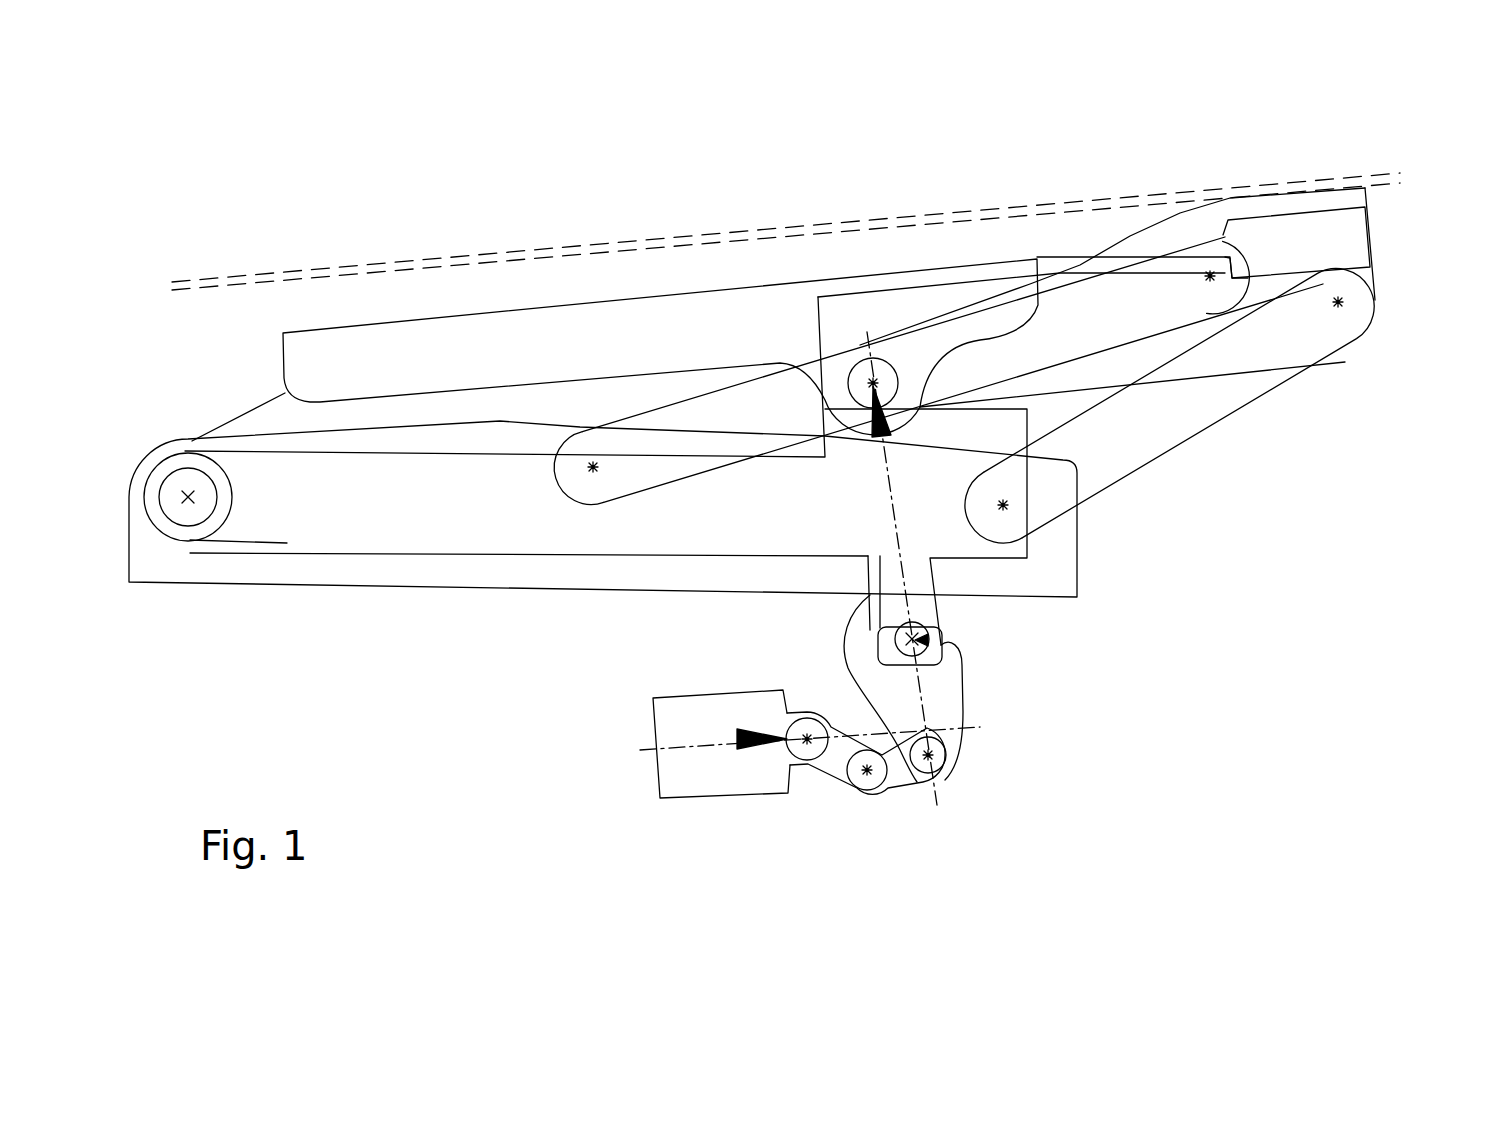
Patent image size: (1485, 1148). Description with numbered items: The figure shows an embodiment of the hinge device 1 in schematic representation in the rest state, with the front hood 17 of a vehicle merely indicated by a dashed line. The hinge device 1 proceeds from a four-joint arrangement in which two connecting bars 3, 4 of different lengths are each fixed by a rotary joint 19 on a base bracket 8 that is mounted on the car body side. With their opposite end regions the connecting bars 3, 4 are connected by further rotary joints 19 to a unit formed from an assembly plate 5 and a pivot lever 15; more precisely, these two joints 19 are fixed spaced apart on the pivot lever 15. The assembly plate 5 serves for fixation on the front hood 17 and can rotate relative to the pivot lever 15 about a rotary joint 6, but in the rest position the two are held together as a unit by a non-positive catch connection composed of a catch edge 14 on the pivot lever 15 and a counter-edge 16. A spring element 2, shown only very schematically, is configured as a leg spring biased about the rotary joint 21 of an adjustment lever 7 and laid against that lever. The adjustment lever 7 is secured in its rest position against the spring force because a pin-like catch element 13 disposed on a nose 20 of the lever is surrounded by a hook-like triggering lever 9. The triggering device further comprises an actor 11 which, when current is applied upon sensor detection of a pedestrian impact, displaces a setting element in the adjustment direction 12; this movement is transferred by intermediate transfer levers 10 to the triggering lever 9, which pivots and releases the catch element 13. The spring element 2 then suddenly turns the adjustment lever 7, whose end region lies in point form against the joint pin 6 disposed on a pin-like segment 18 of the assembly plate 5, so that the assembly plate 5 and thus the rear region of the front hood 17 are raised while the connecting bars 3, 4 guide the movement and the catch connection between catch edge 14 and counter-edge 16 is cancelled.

The hinge device 1 is at (677, 401).
The spring element 2 is at (250, 408).
The connecting bar 3 is at (1160, 425).
The connecting bar 4 is at (647, 475).
The assembly plate 5 is at (553, 333).
The rotary joint 6 is at (877, 383).
The adjustment lever 7 is at (340, 518).
The base bracket 8 is at (1040, 578).
The triggering lever 9 is at (937, 703).
The transfer lever 10 is at (870, 787).
The actor 11 is at (708, 773).
The adjustment direction 12 is at (658, 750).
The catch element 13 is at (955, 648).
The catch edge 14 is at (1300, 235).
The pivot lever 15 is at (1195, 225).
The counter-edge 16 is at (1212, 259).
The front hood 17 is at (218, 282).
The pin-like segment 18 is at (855, 355).
The rotary joint 19 is at (1338, 302).
The nose 20 is at (873, 588).
The rotary joint 21 is at (185, 505).